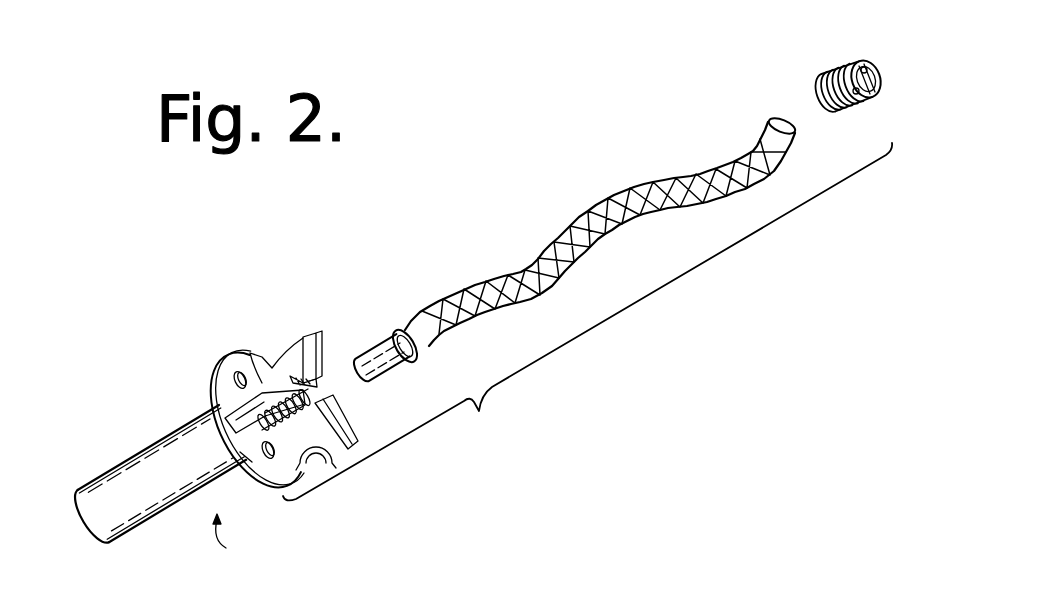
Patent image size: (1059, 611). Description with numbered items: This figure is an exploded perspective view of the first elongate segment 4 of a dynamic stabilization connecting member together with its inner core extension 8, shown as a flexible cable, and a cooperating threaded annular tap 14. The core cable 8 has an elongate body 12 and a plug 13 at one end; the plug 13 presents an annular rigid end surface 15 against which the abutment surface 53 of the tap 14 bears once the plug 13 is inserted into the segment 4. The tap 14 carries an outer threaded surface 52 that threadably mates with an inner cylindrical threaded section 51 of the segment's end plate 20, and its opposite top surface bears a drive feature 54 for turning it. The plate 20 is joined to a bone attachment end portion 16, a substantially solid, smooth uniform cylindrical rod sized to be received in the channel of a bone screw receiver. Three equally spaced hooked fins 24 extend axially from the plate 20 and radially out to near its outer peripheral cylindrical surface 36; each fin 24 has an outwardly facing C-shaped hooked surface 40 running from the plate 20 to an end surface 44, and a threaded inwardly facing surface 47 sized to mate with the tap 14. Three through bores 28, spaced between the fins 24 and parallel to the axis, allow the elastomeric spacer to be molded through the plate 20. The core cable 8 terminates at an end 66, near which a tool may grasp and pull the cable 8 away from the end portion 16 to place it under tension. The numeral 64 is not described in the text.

The first elongate segment 4 is at (224, 538).
The inner core extension 8 is at (576, 226).
The elongate body 12 is at (601, 201).
The plug 13 is at (372, 342).
The threaded annular tap 14 is at (857, 80).
The annular rigid end surface 15 is at (403, 328).
The bone attachment end portion 16 is at (132, 536).
The end plate 20 is at (265, 410).
The hooked fin 24 is at (224, 426).
The through bore 28 is at (237, 372).
The outer peripheral cylindrical surface 36 is at (210, 392).
The hooked surface 40 is at (317, 451).
The fin end surface 44 is at (320, 335).
The threaded inwardly facing surface 47 is at (314, 392).
The inner cylindrical threaded section 51 is at (242, 455).
The outer threaded surface 52 is at (830, 70).
The abutment surface 53 is at (834, 110).
The drive feature 54 is at (874, 61).
The tube end 64 is at (84, 530).
The core cable end 66 is at (785, 114).